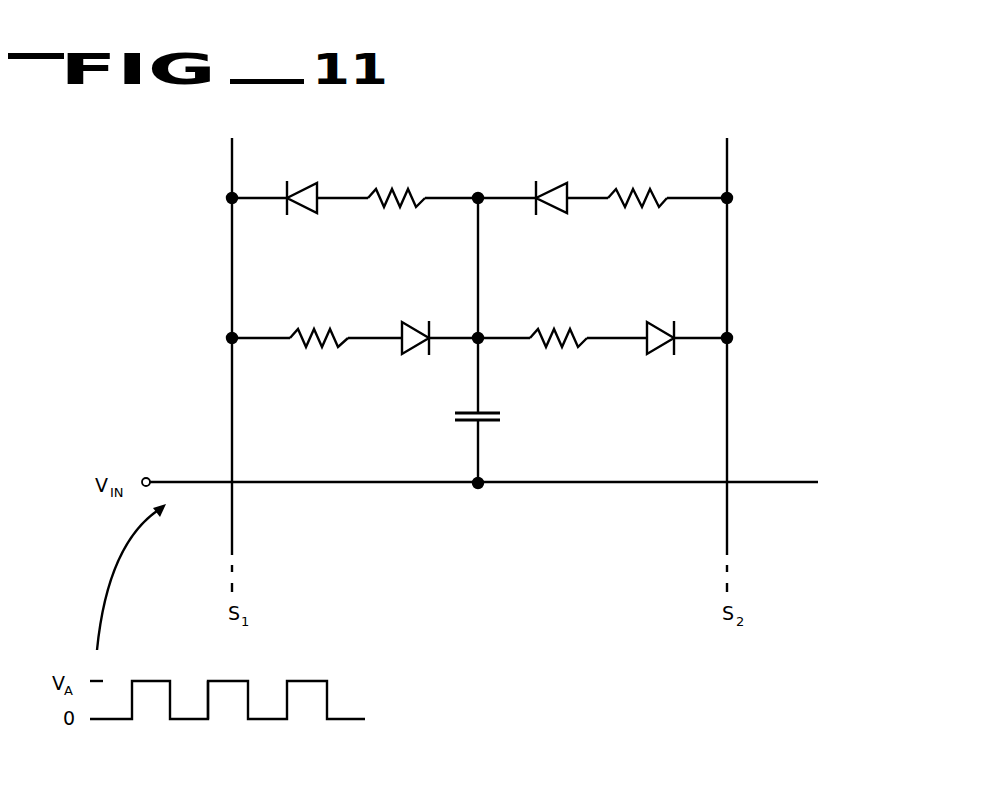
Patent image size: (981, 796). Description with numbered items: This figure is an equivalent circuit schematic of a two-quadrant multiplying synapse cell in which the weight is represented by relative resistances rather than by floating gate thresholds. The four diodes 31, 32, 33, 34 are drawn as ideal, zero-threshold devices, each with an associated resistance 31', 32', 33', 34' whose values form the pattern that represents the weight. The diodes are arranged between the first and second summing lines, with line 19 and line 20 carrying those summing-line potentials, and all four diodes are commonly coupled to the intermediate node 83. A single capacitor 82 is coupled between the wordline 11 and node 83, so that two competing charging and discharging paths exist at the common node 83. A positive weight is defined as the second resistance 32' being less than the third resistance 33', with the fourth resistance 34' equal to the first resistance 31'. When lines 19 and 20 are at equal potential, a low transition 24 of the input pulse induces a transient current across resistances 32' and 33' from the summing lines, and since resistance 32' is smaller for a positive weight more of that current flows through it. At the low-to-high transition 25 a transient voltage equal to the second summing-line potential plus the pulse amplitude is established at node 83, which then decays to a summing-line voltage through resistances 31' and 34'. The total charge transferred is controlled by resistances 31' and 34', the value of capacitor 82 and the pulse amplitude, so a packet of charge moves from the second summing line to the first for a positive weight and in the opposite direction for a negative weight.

The wordline 11 is at (768, 482).
The line 19 is at (229, 196).
The line 20 is at (736, 197).
The low transition 24 is at (172, 700).
The low-to-high transition 25 is at (210, 705).
The diode 31 is at (302, 175).
The associated resistance 31' is at (396, 186).
The diode 32 is at (551, 175).
The associated resistance 32' is at (637, 186).
The diode 33 is at (418, 313).
The associated resistance 33' is at (319, 344).
The diode 34 is at (664, 314).
The associated resistance 34' is at (563, 344).
The capacitor 82 is at (506, 418).
The intermediate node 83 is at (484, 335).